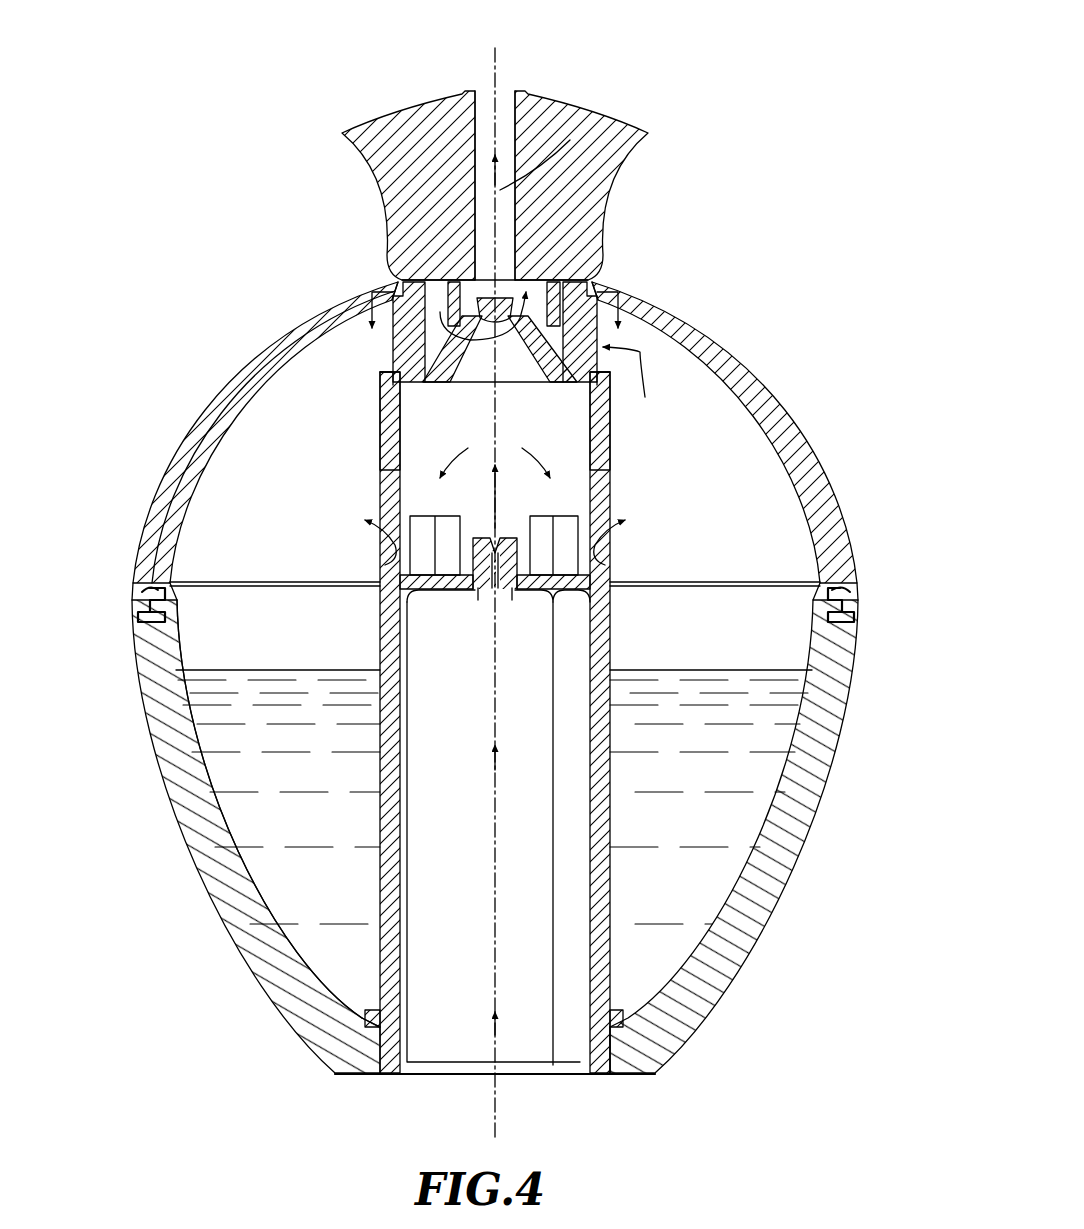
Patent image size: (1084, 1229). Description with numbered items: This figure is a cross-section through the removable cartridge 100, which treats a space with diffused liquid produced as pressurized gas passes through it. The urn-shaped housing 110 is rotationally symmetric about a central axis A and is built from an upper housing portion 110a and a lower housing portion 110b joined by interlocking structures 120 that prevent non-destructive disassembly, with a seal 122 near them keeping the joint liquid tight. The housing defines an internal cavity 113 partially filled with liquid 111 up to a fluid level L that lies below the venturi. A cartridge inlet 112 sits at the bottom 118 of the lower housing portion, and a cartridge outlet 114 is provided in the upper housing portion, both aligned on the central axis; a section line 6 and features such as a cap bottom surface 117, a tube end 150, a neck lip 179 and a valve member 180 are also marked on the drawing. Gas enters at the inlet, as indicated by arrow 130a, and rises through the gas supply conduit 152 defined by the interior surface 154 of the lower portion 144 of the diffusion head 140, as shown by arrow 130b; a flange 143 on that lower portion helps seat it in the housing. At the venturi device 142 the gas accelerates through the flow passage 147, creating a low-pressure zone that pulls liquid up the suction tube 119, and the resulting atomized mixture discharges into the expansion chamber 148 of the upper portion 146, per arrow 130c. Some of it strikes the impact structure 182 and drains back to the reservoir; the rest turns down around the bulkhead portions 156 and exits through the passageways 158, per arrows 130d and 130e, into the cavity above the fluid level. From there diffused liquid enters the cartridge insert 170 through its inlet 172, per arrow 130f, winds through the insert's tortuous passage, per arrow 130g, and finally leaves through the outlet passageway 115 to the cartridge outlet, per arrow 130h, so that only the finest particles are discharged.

The removable cartridge 100 is at (720, 158).
The housing 110 is at (180, 362).
The upper housing portion 110a is at (182, 470).
The lower housing portion 110b is at (185, 800).
The liquid 111 is at (750, 714).
The cartridge inlet 112 is at (430, 1096).
The internal cavity 113 is at (775, 518).
The cartridge outlet 114 is at (476, 92).
The outlet passageway 115 is at (505, 132).
The cap bottom surface 117 is at (598, 282).
The bottom 118 is at (612, 1074).
The suction tube 119 is at (345, 866).
The interlocking structures 120 is at (848, 612).
The seal 122 is at (838, 582).
The flow arrow 130a is at (510, 1050).
The flow arrow 130b is at (457, 762).
The flow arrow 130c is at (495, 502).
The flow arrow 130d is at (466, 440).
The flow arrow 130e is at (376, 560).
The flow arrow 130f is at (645, 397).
The flow arrow 130g is at (498, 340).
The flow arrow 130h is at (540, 165).
The diffusion head 140 is at (358, 618).
The venturi device 142 is at (528, 552).
The flange 143 is at (626, 1015).
The lower portion 144 is at (498, 827).
The upper portion 146 is at (313, 574).
The flow passage 147 is at (483, 600).
The expansion chamber 148 is at (418, 478).
The upper tube end 150 is at (388, 380).
The gas supply conduit 152 is at (420, 1058).
The interior surface 154 is at (412, 1012).
The bulkhead portions 156 is at (384, 410).
The passageways 158 is at (414, 514).
The cartridge insert 170 is at (362, 356).
The inlet 172 is at (607, 380).
The neck lip 179 is at (396, 278).
The valve member 180 is at (516, 368).
The impact structure 182 is at (452, 345).
The section line 6- 6 is at (497, 324).
The fluid level L is at (760, 670).
The central axis A is at (494, 1128).